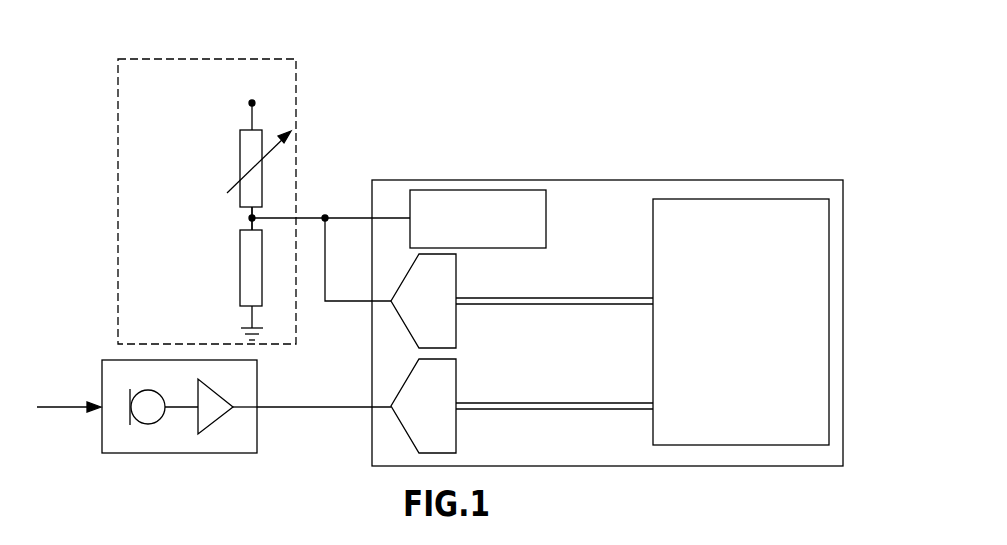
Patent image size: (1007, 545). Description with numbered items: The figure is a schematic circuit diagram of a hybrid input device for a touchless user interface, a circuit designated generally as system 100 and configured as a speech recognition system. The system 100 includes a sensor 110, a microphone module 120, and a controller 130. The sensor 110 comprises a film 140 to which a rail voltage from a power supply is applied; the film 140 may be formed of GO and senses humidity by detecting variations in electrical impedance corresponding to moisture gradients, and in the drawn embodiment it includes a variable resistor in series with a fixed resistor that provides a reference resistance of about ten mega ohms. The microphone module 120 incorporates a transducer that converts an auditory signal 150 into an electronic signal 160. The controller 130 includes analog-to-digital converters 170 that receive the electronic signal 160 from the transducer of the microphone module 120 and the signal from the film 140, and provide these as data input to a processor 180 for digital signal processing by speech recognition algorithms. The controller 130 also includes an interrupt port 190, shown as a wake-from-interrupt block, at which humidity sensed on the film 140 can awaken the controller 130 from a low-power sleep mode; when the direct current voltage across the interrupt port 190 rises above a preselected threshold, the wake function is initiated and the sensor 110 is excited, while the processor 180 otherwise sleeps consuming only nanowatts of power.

The system 100 is at (720, 73).
The sensor 110 is at (296, 120).
The microphone module 120 is at (113, 455).
The controller 130 is at (445, 178).
The film 140 is at (241, 206).
The auditory signal 150 is at (75, 405).
The electronic signal 160 is at (337, 405).
The analog-to-digital converters 170 is at (456, 340).
The processor 180 is at (652, 345).
The interrupt port 190 is at (507, 249).